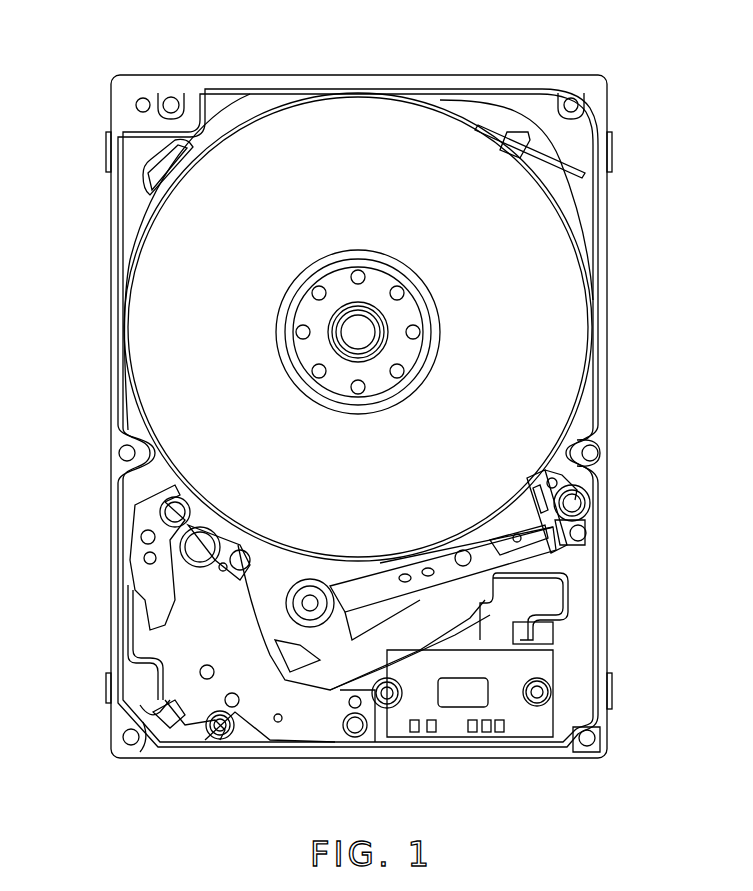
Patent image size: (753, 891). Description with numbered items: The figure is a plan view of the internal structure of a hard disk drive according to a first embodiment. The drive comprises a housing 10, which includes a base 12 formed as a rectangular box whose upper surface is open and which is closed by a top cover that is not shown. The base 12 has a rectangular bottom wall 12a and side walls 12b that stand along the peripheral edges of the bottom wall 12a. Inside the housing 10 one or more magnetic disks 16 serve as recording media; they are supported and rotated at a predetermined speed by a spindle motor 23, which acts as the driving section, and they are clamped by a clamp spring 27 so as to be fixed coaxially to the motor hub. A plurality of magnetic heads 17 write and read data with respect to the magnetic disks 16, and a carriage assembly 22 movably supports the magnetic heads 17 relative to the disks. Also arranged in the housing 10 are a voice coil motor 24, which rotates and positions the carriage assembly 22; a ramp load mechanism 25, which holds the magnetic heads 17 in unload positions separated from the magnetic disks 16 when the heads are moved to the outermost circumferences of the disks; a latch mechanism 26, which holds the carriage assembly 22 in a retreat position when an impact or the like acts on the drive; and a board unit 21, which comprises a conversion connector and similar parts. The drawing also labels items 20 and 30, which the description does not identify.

The housing 10 is at (358, 75).
The base 12 is at (612, 257).
The bottom wall 12a is at (573, 627).
The side walls 12b is at (258, 75).
The magnetic disk 16 is at (165, 263).
The magnetic head 17 is at (545, 523).
The top cover / gasket 20 is at (474, 92).
The board unit 21 is at (512, 697).
The carriage assembly 22 is at (398, 562).
The spindle motor 23 is at (367, 326).
The voice coil motor 24 is at (297, 697).
The ramp load mechanism 25 is at (582, 514).
The latch mechanism 26 is at (148, 575).
The clamp spring 27 is at (285, 337).
The head suspension 30 is at (478, 550).